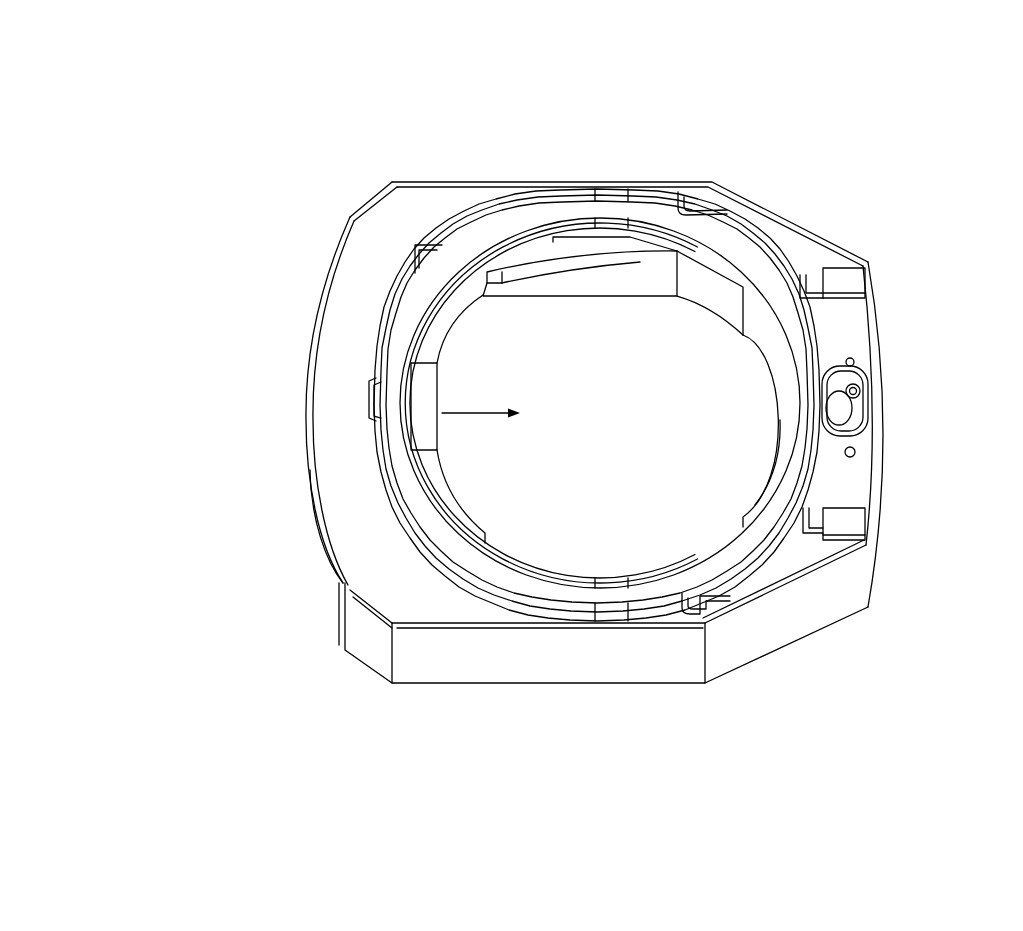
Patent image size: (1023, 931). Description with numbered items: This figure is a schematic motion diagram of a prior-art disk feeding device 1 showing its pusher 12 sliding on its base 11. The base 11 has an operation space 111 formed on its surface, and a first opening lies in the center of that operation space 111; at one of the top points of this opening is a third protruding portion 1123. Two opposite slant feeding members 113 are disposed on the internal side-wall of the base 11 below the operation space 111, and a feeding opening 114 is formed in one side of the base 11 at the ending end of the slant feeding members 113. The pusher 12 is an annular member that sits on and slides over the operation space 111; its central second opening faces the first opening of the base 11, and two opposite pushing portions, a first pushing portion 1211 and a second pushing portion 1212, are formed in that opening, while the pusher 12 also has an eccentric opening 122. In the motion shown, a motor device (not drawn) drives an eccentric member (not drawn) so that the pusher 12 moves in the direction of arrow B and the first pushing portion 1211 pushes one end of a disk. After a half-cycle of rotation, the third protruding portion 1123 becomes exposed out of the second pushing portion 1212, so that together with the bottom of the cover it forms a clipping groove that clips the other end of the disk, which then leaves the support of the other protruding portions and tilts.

The disk feeding device 1 is at (170, 94).
The base 11 is at (822, 640).
The operation space 111 is at (323, 357).
The feeding opening 114 is at (323, 558).
The pusher 12 is at (392, 287).
The first pushing portion 1211 is at (420, 390).
The second pushing portion 1212 is at (805, 370).
The eccentric opening 122 is at (857, 412).
The third protruding portion 1123 is at (790, 392).
The slant feeding member 113 is at (627, 283).